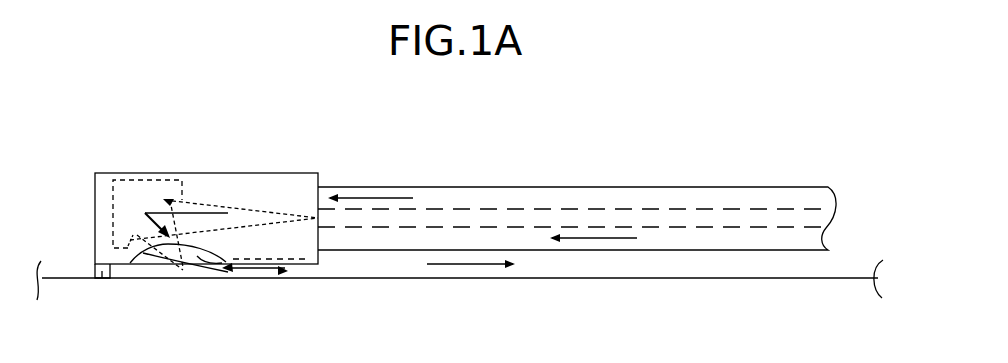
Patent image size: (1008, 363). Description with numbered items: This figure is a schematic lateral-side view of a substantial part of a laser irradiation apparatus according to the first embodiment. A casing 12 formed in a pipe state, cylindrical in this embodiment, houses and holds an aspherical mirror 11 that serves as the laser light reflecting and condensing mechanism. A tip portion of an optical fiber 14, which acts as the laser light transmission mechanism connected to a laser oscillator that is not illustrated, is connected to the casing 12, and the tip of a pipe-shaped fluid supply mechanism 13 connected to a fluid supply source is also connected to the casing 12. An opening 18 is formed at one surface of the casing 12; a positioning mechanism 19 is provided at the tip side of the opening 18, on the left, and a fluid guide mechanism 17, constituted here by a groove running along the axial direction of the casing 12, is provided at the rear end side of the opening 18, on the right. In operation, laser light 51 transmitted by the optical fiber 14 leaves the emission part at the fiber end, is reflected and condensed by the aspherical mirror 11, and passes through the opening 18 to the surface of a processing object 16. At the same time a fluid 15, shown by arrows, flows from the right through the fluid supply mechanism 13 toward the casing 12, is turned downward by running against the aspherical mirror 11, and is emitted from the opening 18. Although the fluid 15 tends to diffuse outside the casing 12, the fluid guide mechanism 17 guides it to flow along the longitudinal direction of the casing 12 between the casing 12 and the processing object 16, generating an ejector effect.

The aspherical mirror 11 is at (135, 185).
The casing 12 is at (298, 173).
The fluid supply mechanism 13 is at (480, 192).
The optical fiber 14 is at (597, 217).
The fluid 15 is at (483, 268).
The processing object 16 is at (58, 280).
The fluid guide mechanism 17 is at (296, 262).
The opening 18 is at (138, 262).
The positioning mechanism 19 is at (102, 280).
The laser light 51 is at (252, 220).